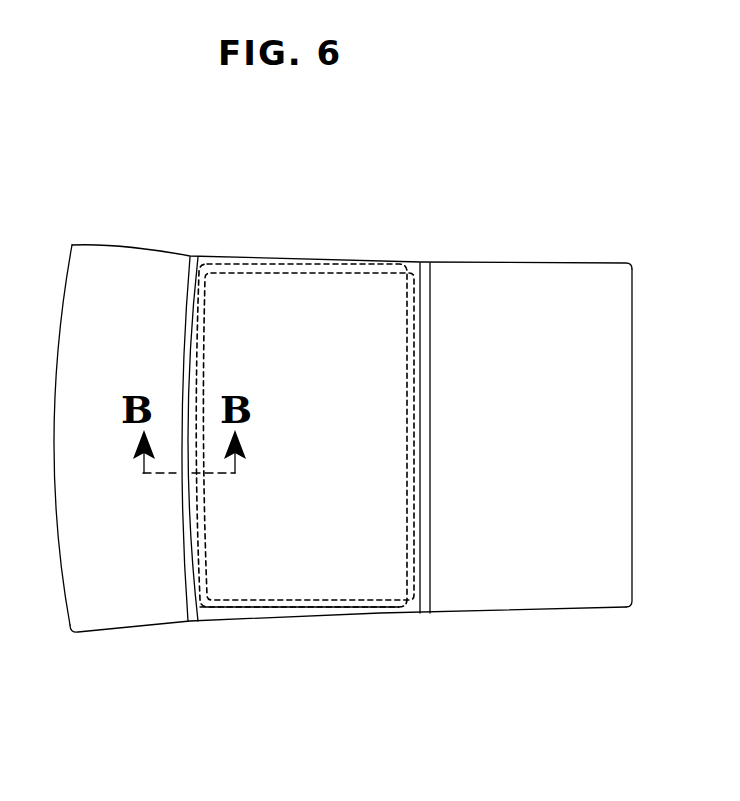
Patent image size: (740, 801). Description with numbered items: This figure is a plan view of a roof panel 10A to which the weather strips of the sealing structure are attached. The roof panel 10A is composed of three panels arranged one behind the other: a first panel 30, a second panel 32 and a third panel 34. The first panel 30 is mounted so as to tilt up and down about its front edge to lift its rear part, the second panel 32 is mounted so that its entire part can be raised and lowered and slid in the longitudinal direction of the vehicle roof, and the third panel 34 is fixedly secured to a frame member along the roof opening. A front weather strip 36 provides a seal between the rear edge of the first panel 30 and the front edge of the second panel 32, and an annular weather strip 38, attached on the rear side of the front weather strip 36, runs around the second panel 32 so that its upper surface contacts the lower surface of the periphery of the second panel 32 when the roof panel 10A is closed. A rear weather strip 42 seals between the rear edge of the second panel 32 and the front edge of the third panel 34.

The roof panel 10A is at (360, 147).
The first panel 30 is at (99, 274).
The second panel 32 is at (320, 300).
The third panel 34 is at (495, 288).
The front weather strip 36 is at (183, 552).
The annular weather strip 38 is at (320, 620).
The rear weather strip 42 is at (423, 542).